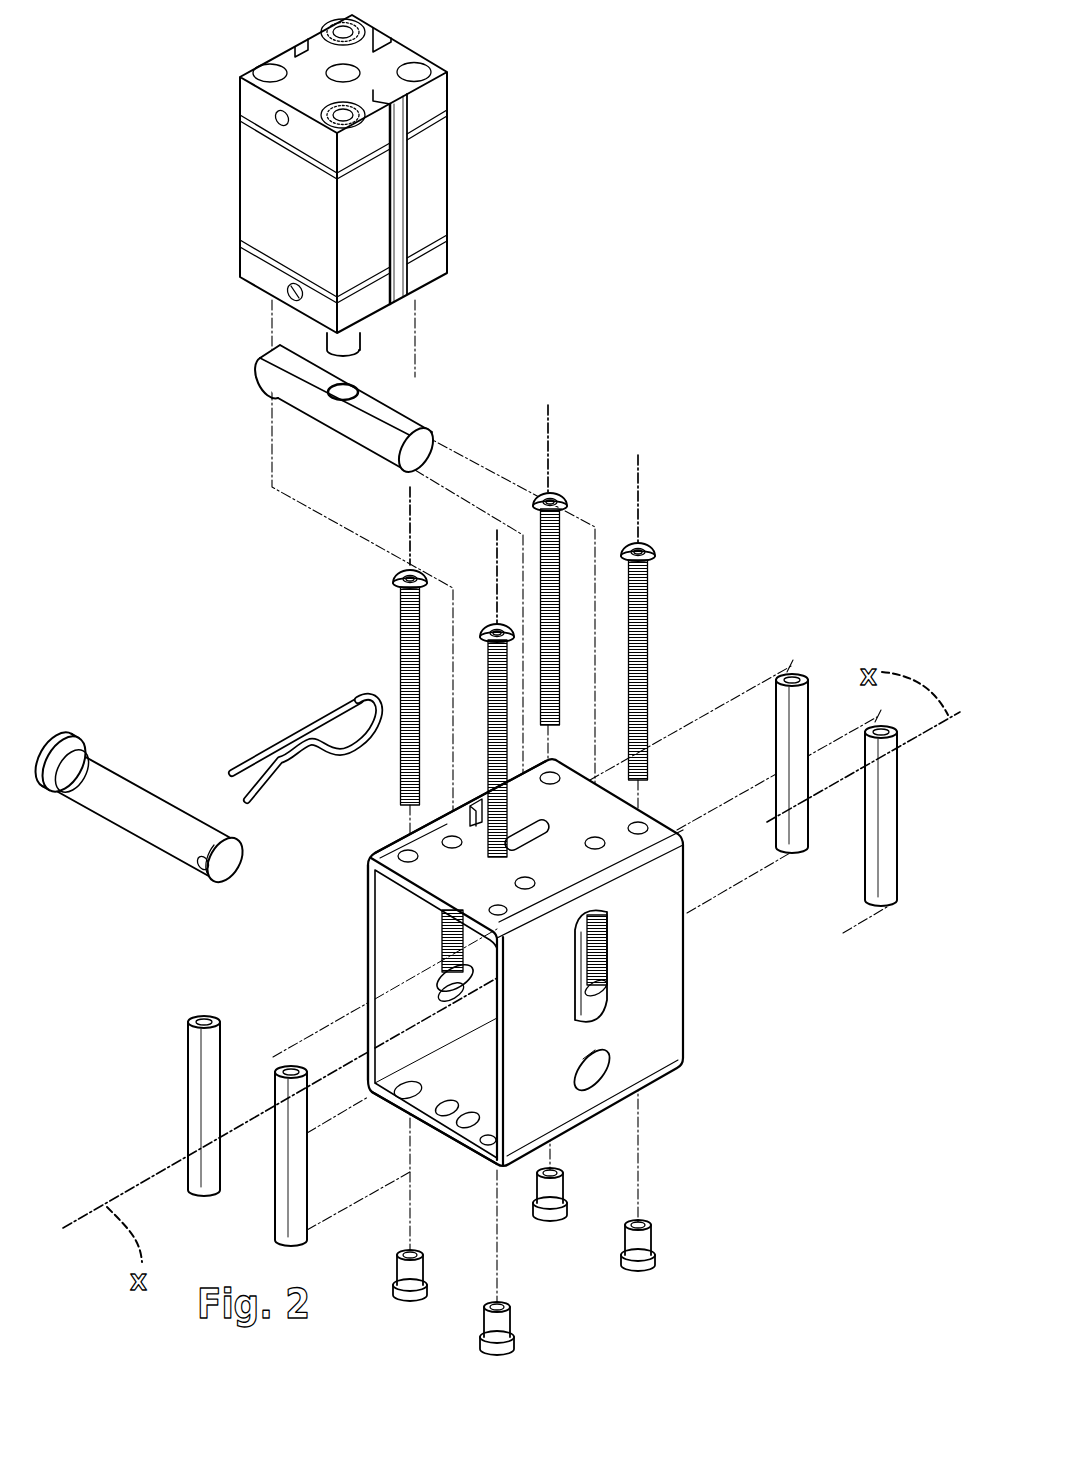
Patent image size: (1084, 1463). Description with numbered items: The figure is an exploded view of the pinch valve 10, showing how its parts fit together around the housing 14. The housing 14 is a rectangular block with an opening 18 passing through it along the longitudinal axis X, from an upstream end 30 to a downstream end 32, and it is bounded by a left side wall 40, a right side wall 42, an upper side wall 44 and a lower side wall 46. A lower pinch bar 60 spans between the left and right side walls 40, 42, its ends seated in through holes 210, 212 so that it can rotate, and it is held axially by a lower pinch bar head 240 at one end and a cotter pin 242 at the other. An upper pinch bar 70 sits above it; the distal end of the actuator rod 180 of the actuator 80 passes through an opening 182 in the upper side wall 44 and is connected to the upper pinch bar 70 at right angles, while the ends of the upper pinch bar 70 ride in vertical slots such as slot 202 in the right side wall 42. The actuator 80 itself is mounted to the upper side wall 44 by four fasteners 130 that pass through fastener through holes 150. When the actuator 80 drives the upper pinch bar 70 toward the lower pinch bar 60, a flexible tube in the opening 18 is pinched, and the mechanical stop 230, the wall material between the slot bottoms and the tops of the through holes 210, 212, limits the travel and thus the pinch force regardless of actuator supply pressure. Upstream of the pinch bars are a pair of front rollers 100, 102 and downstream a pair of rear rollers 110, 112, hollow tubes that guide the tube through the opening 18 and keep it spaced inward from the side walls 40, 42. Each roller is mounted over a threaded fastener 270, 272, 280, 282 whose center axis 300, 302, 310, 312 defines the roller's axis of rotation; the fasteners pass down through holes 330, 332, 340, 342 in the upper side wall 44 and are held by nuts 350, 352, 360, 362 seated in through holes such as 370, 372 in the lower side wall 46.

The pinch valve 10 is at (160, 103).
The housing 14 is at (528, 974).
The opening 18 is at (455, 1072).
The upstream end 30 is at (112, 1170).
The downstream end 32 is at (930, 655).
The left side wall 40 is at (372, 972).
The right side wall 42 is at (503, 998).
The upper side wall 44 is at (376, 870).
The lower side wall 46 is at (448, 1140).
The lower pinch bar 60 is at (138, 779).
The upper pinch bar 70 is at (300, 408).
The actuator 80 is at (268, 174).
The left front roller 100 is at (203, 1106).
The right front roller 102 is at (290, 1183).
The left rear roller 110 is at (800, 702).
The right rear roller 112 is at (888, 796).
The fasteners 130 is at (440, 935).
The fastener through holes 150 is at (598, 848).
The actuator rod 180 is at (362, 343).
The opening 182 is at (603, 975).
The vertical slot 202 is at (614, 1040).
The through hole 210 is at (453, 993).
The through hole 212 is at (600, 1085).
The mechanical stop 230 is at (640, 1030).
The lower pinch bar head 240 is at (76, 736).
The cotter pin 242 is at (337, 710).
The threaded fastener 270 is at (400, 624).
The threaded fastener 272 is at (488, 666).
The threaded fastener 280 is at (560, 547).
The threaded fastener 282 is at (630, 597).
The center axis 300 is at (410, 525).
The center axis 302 is at (493, 594).
The center axis 310 is at (550, 452).
The center axis 312 is at (637, 477).
The through hole 330 is at (405, 851).
The through hole 332 is at (459, 846).
The through hole 340 is at (553, 772).
The through hole 342 is at (642, 828).
The nut 350 is at (410, 1297).
The nut 352 is at (485, 1345).
The nut 360 is at (543, 1224).
The nut 362 is at (622, 1256).
The through hole 370 is at (406, 1086).
The through hole 372 is at (488, 1168).